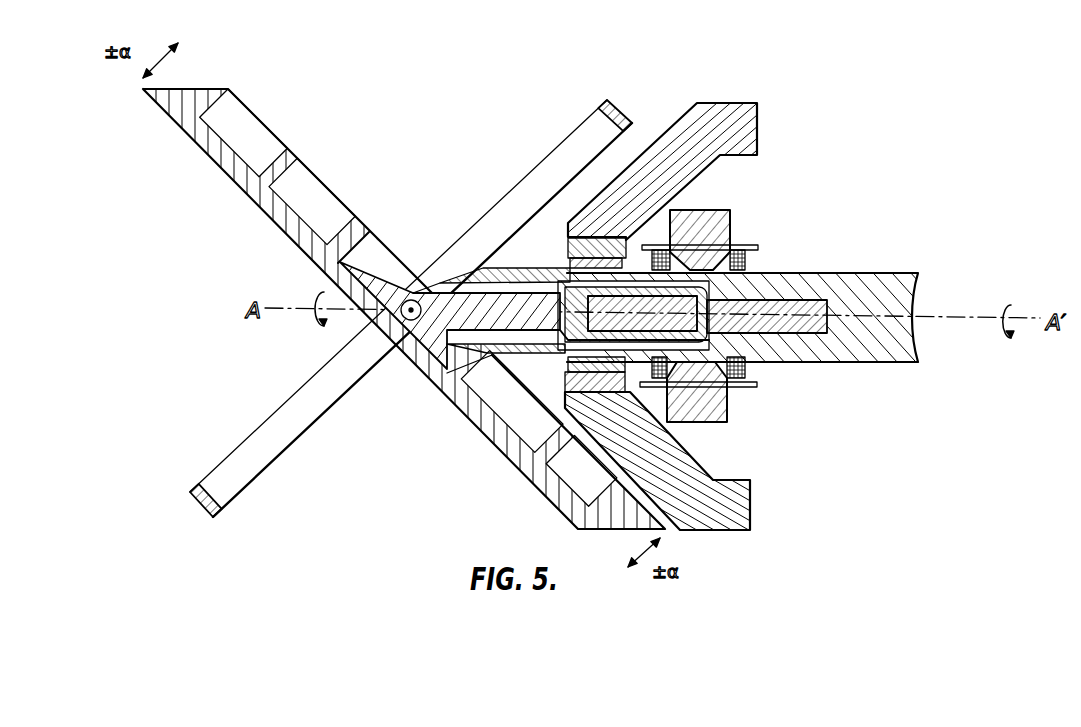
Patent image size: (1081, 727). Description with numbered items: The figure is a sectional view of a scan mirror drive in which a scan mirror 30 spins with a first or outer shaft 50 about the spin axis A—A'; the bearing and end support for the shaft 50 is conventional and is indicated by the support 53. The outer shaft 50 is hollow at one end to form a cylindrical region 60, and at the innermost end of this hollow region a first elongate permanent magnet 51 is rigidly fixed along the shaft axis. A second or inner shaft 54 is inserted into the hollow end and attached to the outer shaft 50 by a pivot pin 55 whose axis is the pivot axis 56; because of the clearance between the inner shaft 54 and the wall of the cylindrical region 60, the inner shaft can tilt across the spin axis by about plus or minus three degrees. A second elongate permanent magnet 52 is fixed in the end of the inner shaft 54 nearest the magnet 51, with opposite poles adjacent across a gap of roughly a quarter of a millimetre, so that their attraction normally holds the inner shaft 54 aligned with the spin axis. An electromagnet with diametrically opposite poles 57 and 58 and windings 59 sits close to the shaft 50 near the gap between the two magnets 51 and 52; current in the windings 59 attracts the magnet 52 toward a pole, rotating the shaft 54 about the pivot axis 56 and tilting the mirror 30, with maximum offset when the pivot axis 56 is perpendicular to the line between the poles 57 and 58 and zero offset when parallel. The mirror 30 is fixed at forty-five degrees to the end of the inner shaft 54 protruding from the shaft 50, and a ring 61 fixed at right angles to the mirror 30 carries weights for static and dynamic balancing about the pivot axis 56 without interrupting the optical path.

The scan mirror 30 is at (237, 177).
The first or outer shaft 50 is at (878, 355).
The first elongate permanent magnet 51 is at (800, 305).
The second elongate permanent magnet 52 is at (586, 301).
The bearing and end support 53 is at (660, 140).
The second or inner shaft 54 is at (505, 318).
The pivot pin 55 is at (403, 318).
The pivot axis 56 is at (416, 320).
The electromagnet pole 57 is at (730, 223).
The electromagnet pole 58 is at (732, 407).
The windings 59 is at (748, 367).
The cylindrical region 60 is at (487, 284).
The ring 61 is at (240, 455).